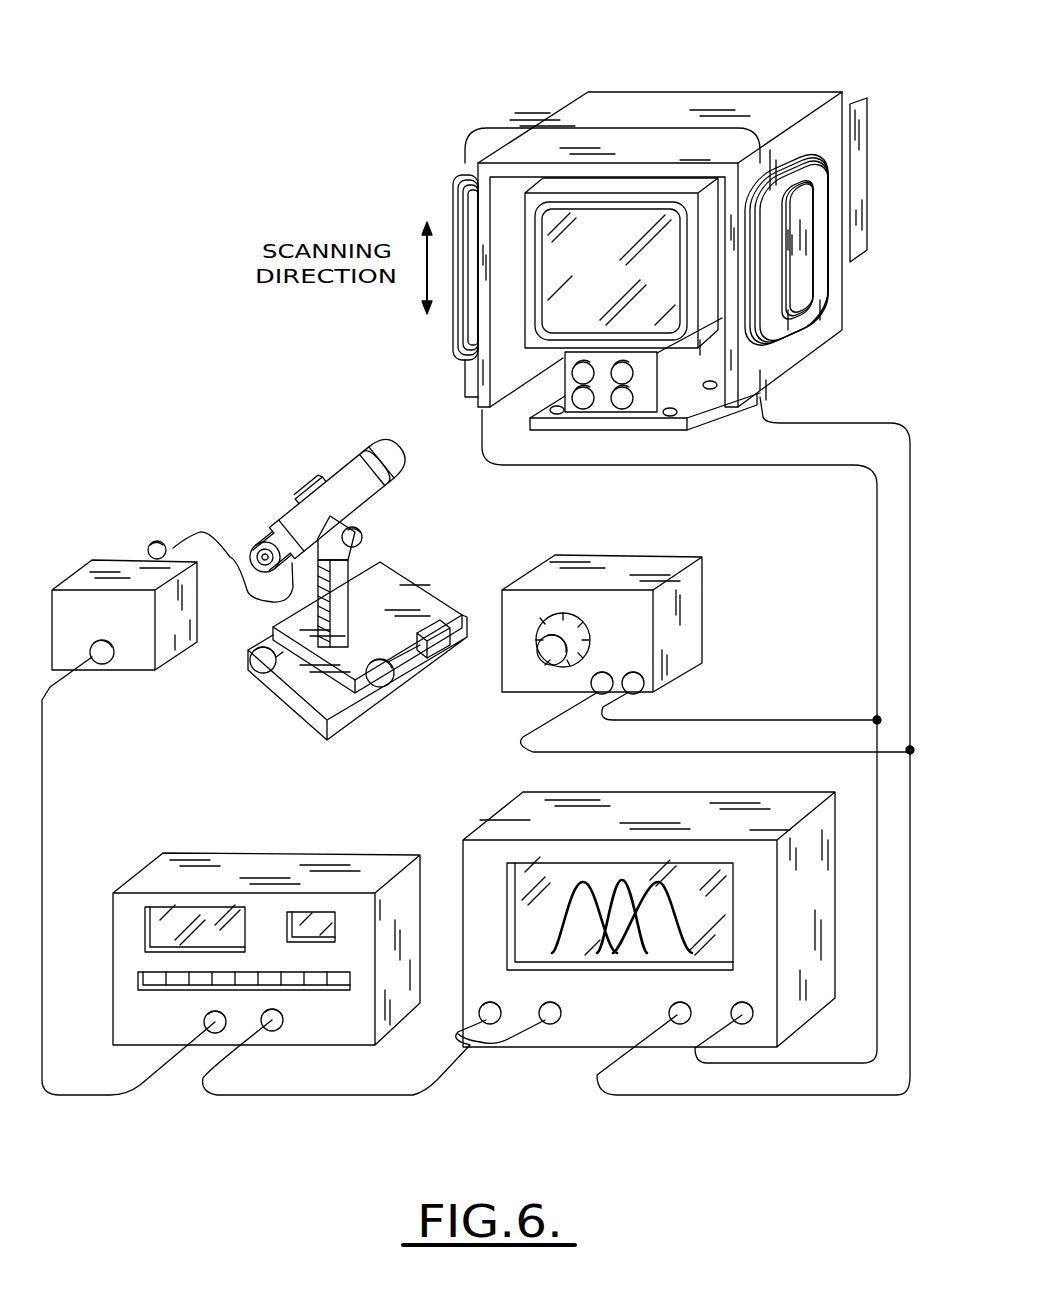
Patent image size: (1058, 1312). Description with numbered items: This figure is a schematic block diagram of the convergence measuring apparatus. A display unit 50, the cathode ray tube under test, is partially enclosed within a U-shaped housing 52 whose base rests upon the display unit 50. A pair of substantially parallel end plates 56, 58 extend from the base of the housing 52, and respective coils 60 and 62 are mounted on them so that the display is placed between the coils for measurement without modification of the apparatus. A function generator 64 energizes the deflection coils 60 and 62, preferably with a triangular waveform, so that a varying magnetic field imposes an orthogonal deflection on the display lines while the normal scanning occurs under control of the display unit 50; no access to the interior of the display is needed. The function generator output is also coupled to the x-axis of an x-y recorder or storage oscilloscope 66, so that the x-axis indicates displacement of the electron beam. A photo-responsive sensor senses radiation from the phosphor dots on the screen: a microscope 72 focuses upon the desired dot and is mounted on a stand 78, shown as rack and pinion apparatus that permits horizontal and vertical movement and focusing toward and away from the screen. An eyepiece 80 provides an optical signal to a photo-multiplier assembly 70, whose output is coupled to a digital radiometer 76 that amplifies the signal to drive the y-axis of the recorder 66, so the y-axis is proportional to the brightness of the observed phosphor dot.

The display unit 50 is at (906, 188).
The U-shaped housing 52 is at (516, 104).
The end plate 56 is at (473, 387).
The end plate 58 is at (807, 353).
The coil 60 is at (453, 195).
The coil 62 is at (823, 310).
The function generator 64 is at (703, 595).
The x-y recorder or storage oscilloscope 66 is at (497, 807).
The photo-multiplier assembly 70 is at (110, 558).
The microscope 72 is at (340, 478).
The digital radiometer 76 is at (283, 855).
The stand 78 is at (398, 587).
The eyepiece 80 is at (263, 540).